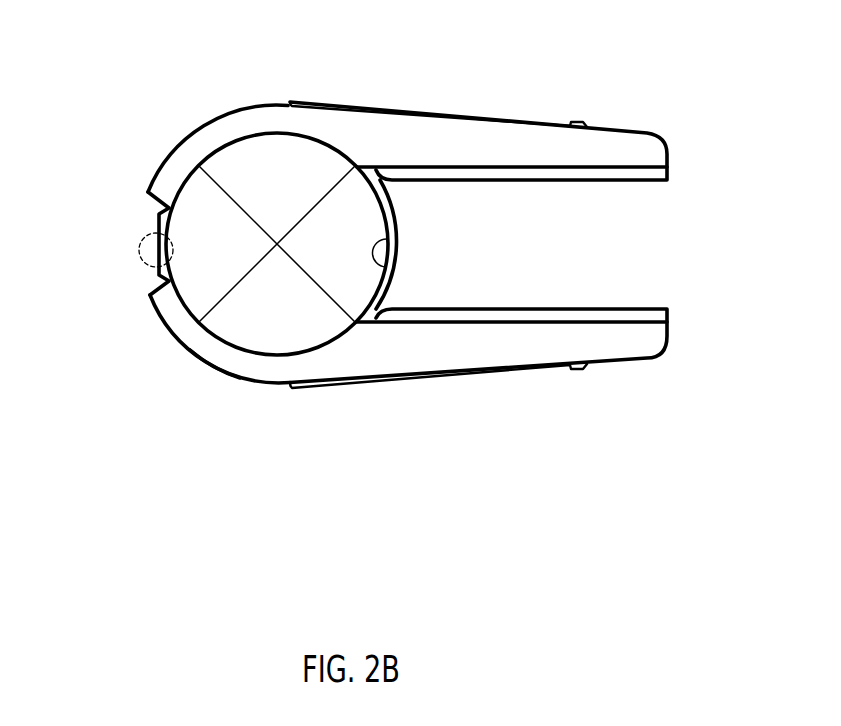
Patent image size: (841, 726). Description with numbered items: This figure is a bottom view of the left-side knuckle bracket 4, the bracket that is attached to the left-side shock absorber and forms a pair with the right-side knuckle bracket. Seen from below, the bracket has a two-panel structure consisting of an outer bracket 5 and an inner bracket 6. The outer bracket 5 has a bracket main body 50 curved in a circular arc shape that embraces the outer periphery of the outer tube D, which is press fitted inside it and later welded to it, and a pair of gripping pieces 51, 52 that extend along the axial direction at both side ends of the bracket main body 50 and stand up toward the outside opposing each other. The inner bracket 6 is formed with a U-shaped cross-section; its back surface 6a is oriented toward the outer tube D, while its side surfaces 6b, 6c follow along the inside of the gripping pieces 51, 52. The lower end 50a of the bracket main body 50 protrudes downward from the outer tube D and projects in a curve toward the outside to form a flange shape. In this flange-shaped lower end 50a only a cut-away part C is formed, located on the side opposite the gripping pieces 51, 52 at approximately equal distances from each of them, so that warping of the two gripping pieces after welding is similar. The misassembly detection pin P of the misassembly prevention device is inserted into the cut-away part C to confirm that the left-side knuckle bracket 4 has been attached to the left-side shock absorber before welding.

The left-side knuckle bracket 4 is at (506, 246).
The outer bracket 5 is at (190, 271).
The inner bracket 6 is at (478, 242).
The back surface 6a is at (397, 268).
The side surface 6b is at (516, 310).
The side surface 6c is at (490, 179).
The bracket main body 50 is at (175, 235).
The lower end of bracket main body 50a is at (228, 358).
The gripping piece 51 is at (538, 366).
The gripping piece 52 is at (519, 121).
The cut-away part C is at (150, 200).
The outer tube D is at (268, 133).
The misassembly detection pin P is at (140, 253).